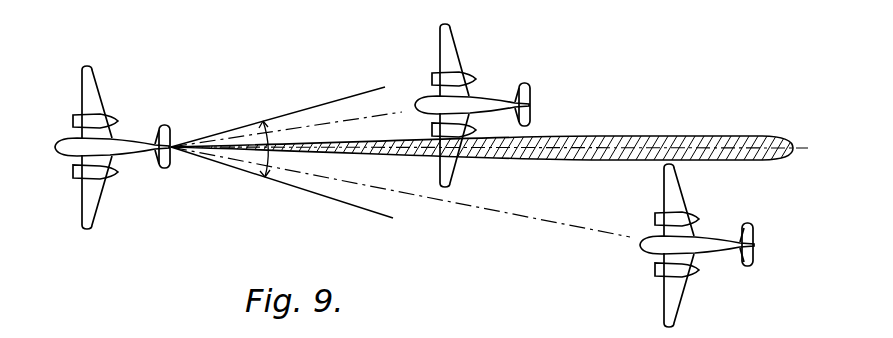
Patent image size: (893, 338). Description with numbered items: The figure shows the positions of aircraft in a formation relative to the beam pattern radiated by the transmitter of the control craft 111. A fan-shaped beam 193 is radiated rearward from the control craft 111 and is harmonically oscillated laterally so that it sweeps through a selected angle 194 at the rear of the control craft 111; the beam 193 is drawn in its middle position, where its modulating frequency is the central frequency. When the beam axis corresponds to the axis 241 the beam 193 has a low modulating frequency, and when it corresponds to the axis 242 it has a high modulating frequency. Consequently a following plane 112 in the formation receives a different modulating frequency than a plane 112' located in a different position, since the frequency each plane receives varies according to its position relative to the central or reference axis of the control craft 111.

The control craft 111 is at (112, 148).
The following plane 112 is at (472, 105).
The following plane in a different position 112' is at (671, 245).
The fan-shaped beam 193 is at (642, 142).
The angle 194 is at (282, 160).
The axis 241 is at (317, 104).
The axis 242 is at (348, 208).